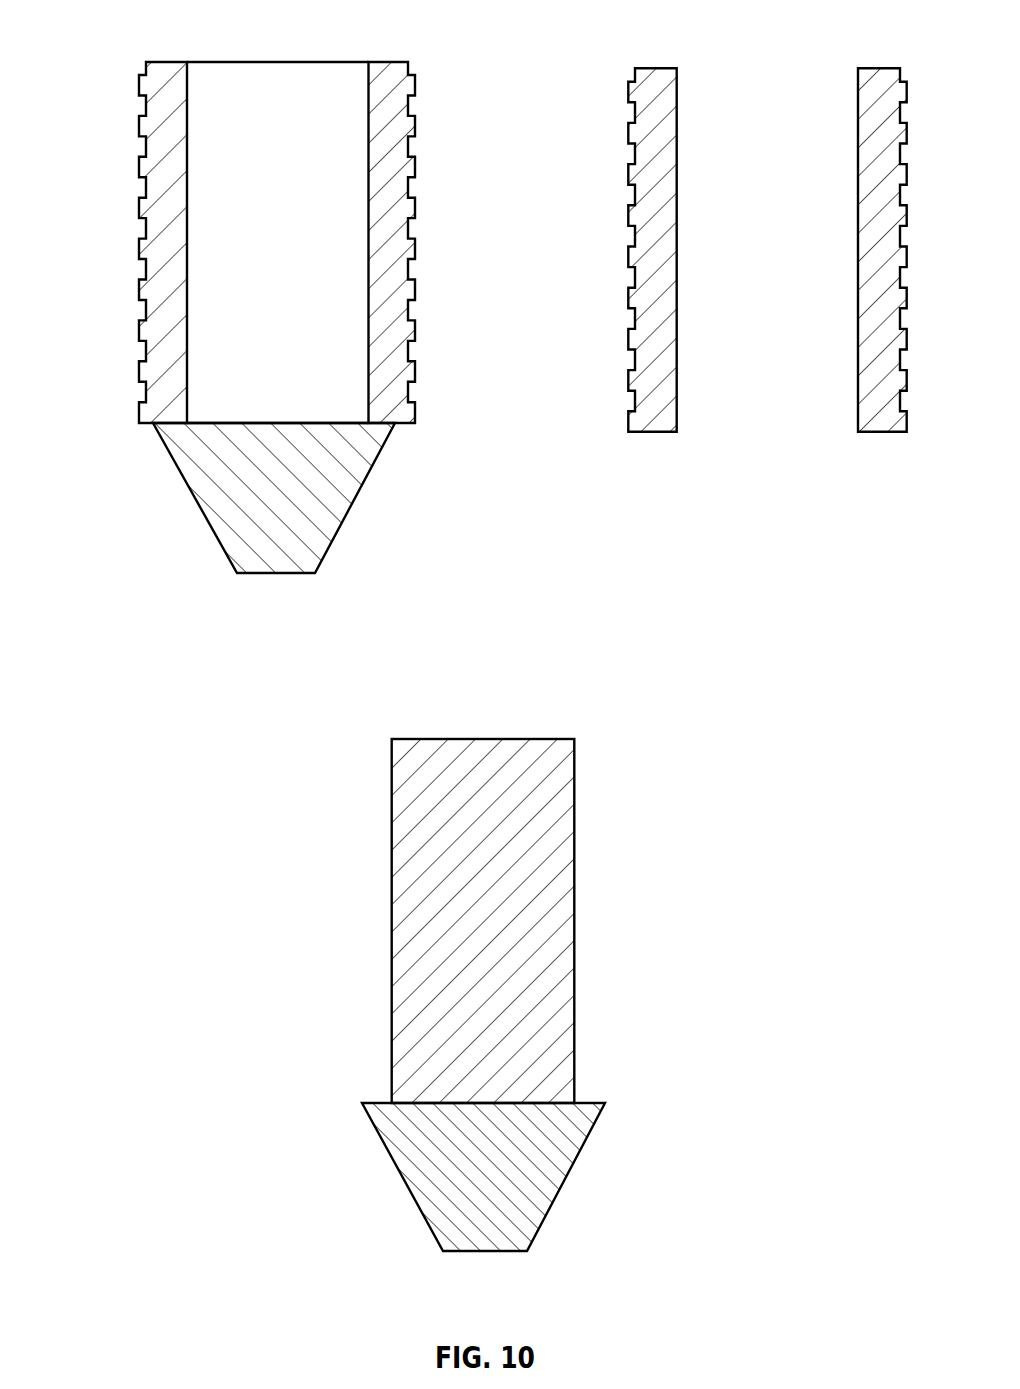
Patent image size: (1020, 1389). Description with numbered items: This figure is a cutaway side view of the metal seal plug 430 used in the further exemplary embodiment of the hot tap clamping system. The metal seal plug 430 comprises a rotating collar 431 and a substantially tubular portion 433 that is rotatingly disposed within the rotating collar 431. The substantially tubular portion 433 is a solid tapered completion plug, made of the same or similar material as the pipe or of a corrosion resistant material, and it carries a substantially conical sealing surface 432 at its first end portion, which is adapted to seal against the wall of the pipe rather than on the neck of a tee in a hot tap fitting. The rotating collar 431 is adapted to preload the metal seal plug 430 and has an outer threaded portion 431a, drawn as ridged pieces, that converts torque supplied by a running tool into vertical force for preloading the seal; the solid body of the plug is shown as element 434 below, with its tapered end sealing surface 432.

The metal seal plug 430 is at (228, 242).
The rotating collar 431 is at (167, 248).
The outer threaded portion 431a is at (665, 78).
The substantially conical sealing surface 432 is at (213, 507).
The substantially tubular portion 433 is at (222, 206).
The solid core rod 434 is at (410, 898).